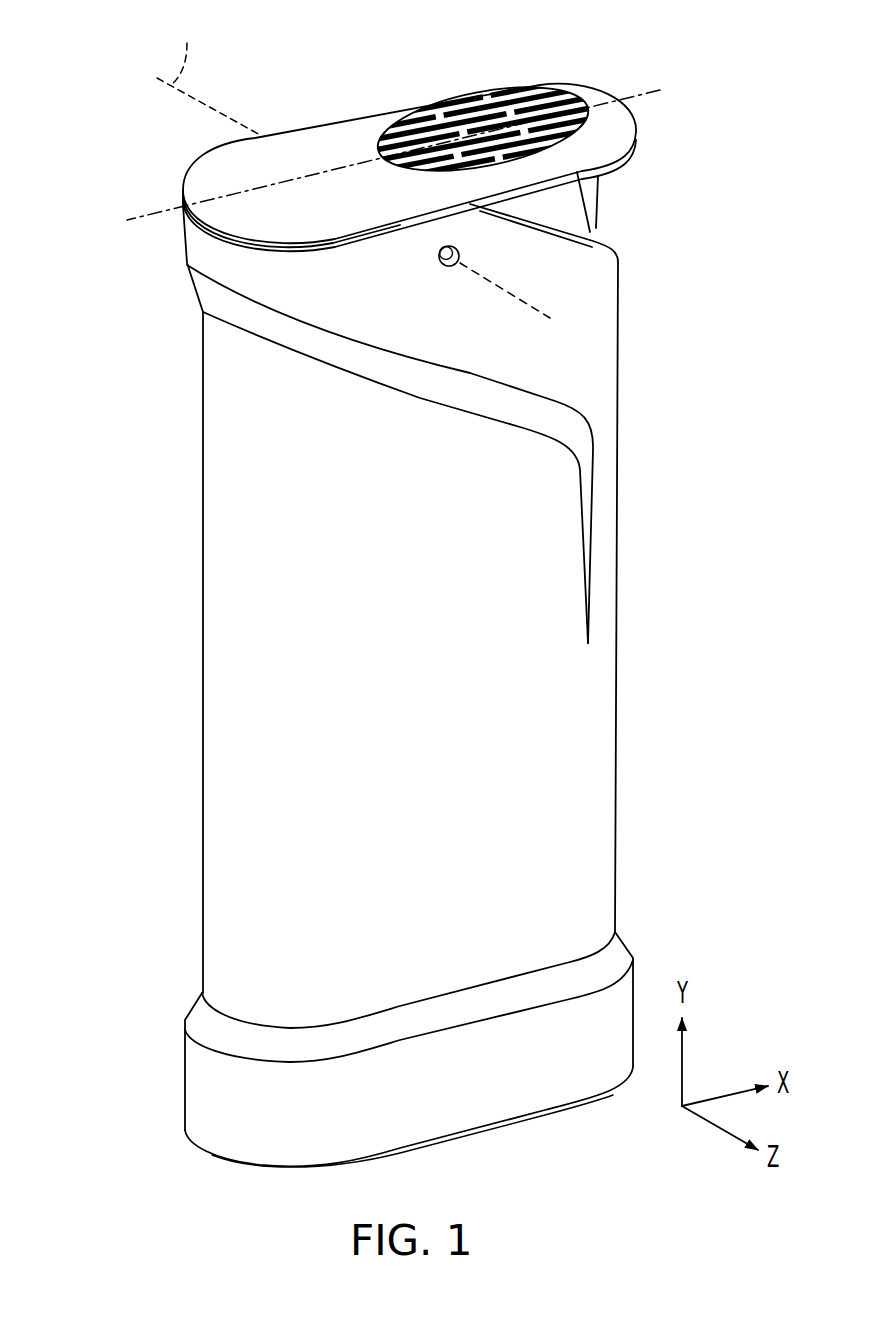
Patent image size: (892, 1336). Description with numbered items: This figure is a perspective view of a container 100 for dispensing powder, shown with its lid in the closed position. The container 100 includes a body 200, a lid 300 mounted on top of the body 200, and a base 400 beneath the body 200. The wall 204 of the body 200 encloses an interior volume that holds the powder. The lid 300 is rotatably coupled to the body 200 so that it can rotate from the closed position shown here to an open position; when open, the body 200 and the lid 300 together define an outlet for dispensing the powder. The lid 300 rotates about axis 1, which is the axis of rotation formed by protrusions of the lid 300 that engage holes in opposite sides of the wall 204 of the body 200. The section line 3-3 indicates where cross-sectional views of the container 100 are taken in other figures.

The container 100 is at (735, 146).
The body 200 is at (620, 710).
The wall 204 is at (227, 763).
The lid 300 is at (309, 129).
The base 400 is at (183, 1072).
The axis 1 is at (209, 73).
The line 3- 3 is at (660, 90).